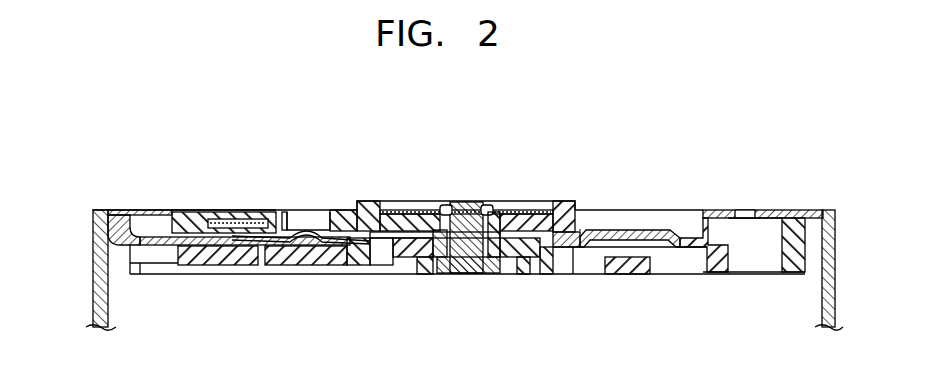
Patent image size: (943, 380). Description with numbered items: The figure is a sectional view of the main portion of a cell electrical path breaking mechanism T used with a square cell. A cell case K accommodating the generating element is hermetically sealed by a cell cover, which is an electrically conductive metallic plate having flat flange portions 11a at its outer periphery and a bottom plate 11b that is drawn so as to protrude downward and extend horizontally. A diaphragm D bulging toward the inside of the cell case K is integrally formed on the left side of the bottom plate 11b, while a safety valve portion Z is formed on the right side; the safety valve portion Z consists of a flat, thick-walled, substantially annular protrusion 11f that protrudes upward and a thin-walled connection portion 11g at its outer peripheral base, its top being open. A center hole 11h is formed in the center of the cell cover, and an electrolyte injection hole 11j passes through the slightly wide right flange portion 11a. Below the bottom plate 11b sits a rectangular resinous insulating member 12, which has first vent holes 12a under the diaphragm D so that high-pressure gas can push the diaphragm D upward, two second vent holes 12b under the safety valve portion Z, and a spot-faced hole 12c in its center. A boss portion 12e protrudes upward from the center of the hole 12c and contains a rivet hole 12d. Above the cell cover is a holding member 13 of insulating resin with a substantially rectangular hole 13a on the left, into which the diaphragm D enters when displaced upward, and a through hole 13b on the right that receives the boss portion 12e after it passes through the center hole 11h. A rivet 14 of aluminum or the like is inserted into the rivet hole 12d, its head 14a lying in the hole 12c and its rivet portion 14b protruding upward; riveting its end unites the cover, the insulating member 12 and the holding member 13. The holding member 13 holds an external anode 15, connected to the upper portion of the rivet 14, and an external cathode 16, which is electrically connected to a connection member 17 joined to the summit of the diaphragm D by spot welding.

The cell case K is at (93, 253).
The cell electrical path breaking mechanism T is at (184, 199).
The safety valve portion Z is at (605, 228).
The diaphragm D is at (307, 241).
The flange portion 11a is at (116, 210).
The bottom plate 11b is at (583, 274).
The protrusion 11f is at (641, 230).
The connection portion 11g is at (677, 236).
The center hole 11h is at (560, 270).
The electrolyte injection hole 11j is at (744, 211).
The insulating member 12 is at (372, 270).
The first vent hole 12a is at (260, 265).
The second vent hole 12b is at (600, 274).
The hole 12c is at (523, 274).
The rivet hole 12d is at (452, 270).
The boss portion 12e is at (495, 273).
The holding member 13 is at (366, 201).
The rectangular hole 13a is at (321, 211).
The through hole 13b is at (447, 210).
The rivet 14 is at (457, 202).
The head 14a is at (437, 273).
The rivet portion 14b is at (482, 210).
The external anode 15 is at (527, 211).
The external cathode 16 is at (238, 211).
The connection member 17 is at (308, 222).